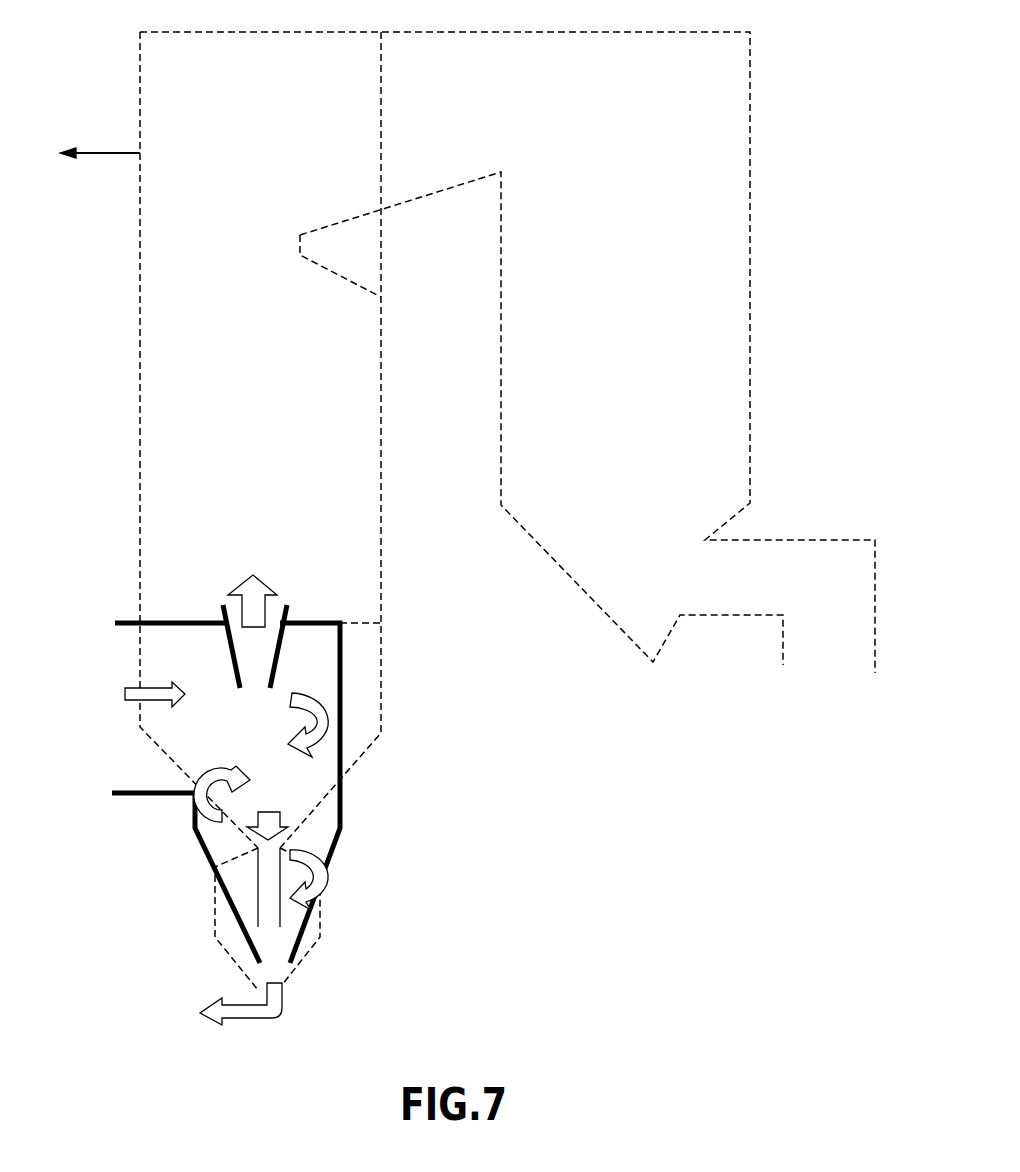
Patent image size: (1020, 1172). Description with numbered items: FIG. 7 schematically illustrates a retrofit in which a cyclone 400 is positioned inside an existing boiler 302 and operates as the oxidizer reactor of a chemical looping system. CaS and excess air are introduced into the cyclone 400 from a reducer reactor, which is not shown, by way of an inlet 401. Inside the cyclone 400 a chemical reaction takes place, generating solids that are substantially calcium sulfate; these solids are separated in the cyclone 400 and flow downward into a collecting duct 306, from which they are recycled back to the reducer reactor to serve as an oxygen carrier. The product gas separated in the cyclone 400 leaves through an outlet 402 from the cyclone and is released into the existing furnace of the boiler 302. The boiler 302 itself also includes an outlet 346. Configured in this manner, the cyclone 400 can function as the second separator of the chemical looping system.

The boiler 302 is at (272, 455).
The collecting duct 306 is at (298, 880).
The outlet 346 is at (110, 152).
The cyclone 400 is at (158, 622).
The inlet 401 is at (125, 700).
The outlet 402 is at (272, 622).